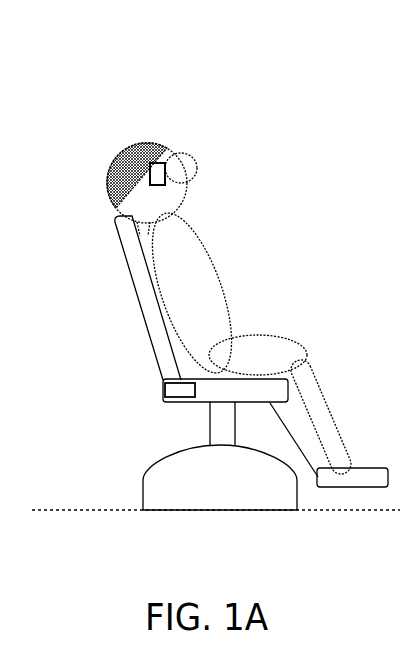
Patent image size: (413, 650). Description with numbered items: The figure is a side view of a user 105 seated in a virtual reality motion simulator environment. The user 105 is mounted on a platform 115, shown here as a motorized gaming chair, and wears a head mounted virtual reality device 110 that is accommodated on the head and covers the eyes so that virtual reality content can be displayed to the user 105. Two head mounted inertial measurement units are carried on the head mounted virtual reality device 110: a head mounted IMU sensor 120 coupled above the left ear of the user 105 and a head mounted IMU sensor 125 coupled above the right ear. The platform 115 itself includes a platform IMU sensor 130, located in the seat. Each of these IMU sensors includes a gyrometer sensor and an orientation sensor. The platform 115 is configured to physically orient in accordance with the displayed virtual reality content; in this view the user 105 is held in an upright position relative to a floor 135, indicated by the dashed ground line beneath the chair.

The user 105 is at (209, 266).
The head mounted virtual reality device 110 is at (189, 164).
The platform 115 is at (123, 262).
The head mounted IMU sensor 120 is at (135, 142).
The head mounted IMU sensor 125 is at (158, 162).
The platform IMU sensor 130 is at (163, 390).
The floor 135 is at (100, 510).